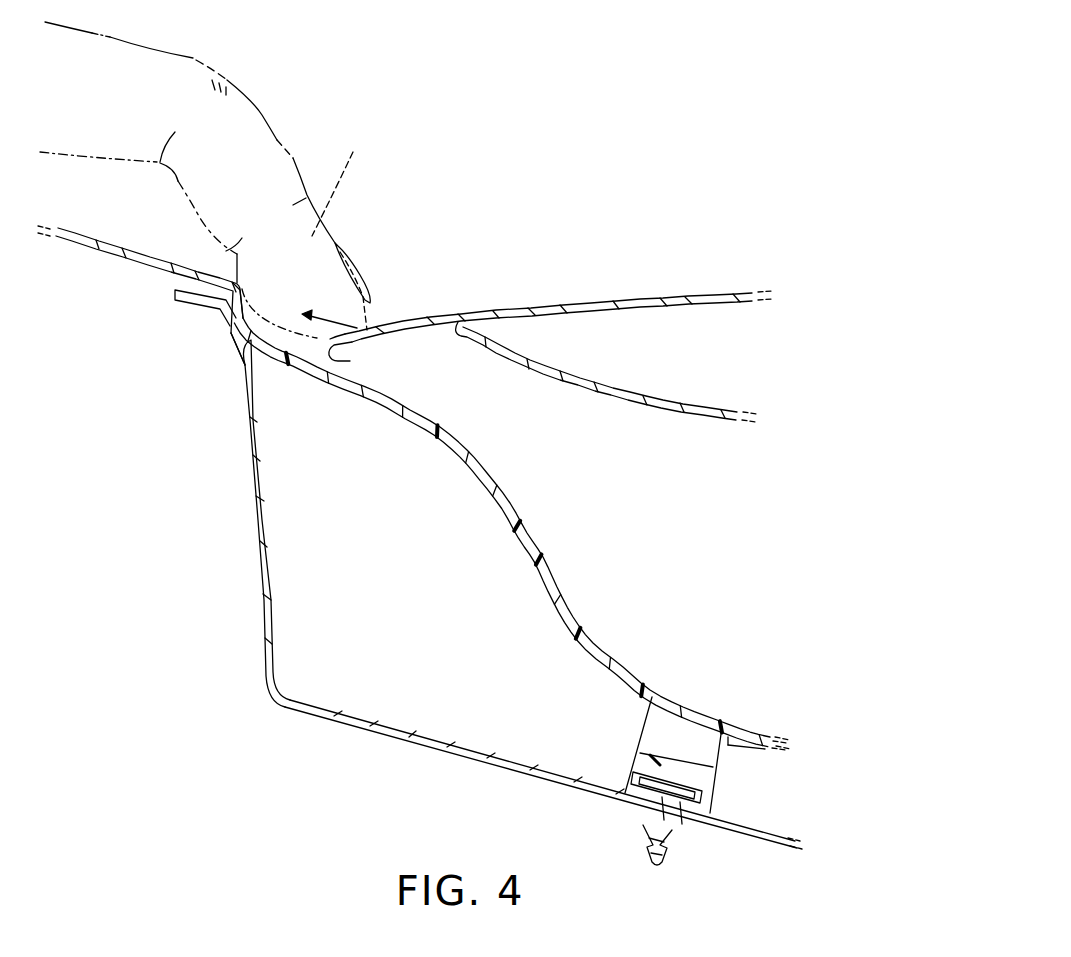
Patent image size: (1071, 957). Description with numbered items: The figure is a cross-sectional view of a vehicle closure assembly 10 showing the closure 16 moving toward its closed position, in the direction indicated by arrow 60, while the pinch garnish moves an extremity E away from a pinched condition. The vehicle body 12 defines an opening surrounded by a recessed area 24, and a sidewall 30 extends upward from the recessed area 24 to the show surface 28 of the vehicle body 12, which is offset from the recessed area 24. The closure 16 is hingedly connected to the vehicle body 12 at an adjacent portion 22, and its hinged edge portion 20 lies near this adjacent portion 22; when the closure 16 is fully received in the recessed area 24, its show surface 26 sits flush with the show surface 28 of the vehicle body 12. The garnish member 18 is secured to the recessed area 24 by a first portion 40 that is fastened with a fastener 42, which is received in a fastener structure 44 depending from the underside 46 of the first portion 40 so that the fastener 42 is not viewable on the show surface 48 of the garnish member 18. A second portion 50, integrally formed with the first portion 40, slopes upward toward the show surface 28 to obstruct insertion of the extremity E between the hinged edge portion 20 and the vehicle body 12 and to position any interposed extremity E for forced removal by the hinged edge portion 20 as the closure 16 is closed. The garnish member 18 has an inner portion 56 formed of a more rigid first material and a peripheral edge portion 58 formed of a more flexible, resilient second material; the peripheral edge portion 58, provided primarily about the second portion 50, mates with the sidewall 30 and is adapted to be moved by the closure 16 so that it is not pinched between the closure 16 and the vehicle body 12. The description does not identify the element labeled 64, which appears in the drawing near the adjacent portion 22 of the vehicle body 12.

The vehicle closure assembly 10 is at (436, 167).
The vehicle body 12 is at (91, 233).
The closure 16 is at (748, 341).
The garnish member 18 is at (544, 535).
The hinged edge portion 20 is at (383, 335).
The adjacent portion 22 is at (240, 280).
The recessed area 24 is at (414, 730).
The show surface 26 is at (565, 302).
The show surface 28 is at (134, 256).
The sidewall 30 is at (262, 497).
The first portion 40 is at (712, 716).
The fastener 42 is at (668, 830).
The fastener structure 44 is at (726, 756).
The underside 46 is at (762, 748).
The show surface 48 is at (640, 678).
The second portion 50 is at (397, 403).
The inner portion 56 is at (485, 466).
The peripheral edge portion 58 is at (297, 368).
The arrow 60 is at (325, 317).
The retaining flange 64 is at (243, 320).
The extremity E is at (338, 180).